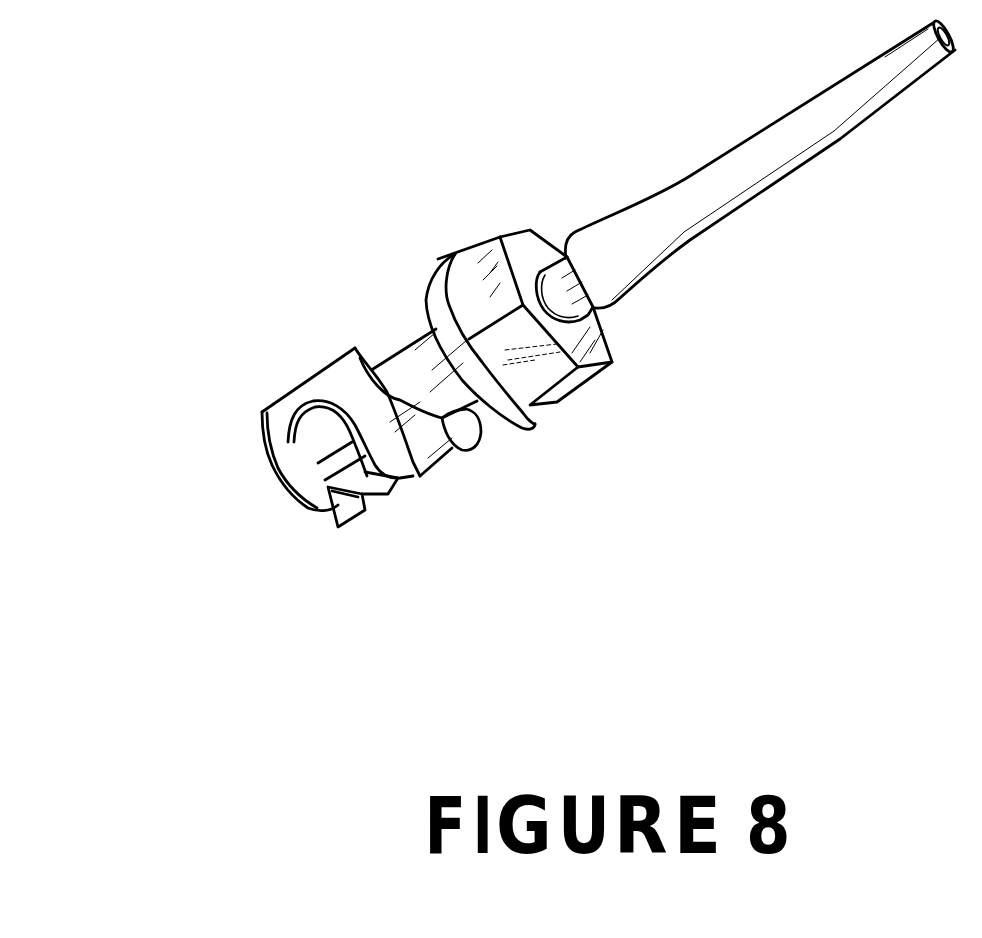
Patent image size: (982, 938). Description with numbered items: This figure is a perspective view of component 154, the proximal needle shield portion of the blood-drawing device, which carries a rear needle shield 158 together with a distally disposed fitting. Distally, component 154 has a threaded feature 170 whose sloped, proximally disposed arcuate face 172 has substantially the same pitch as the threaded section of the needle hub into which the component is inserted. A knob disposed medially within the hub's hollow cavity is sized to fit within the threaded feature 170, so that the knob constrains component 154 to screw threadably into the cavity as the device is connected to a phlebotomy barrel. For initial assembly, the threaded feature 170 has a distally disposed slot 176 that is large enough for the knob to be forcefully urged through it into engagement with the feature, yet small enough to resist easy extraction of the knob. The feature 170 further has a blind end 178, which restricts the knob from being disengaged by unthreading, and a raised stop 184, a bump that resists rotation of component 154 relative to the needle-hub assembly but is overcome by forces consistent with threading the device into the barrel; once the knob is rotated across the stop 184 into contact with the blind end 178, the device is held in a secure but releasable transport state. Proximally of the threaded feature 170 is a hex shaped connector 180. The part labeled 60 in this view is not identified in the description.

The component 154 is at (557, 190).
The rear needle shield 158 is at (764, 191).
The hex nut 60 is at (605, 356).
The hex shaped connector 180 is at (462, 278).
The threaded feature 170 is at (415, 472).
The sloped proximally disposed arcuate face 172 is at (467, 436).
The blind end 178 is at (279, 423).
The raised stop 184 is at (337, 457).
The slot 176 is at (330, 520).